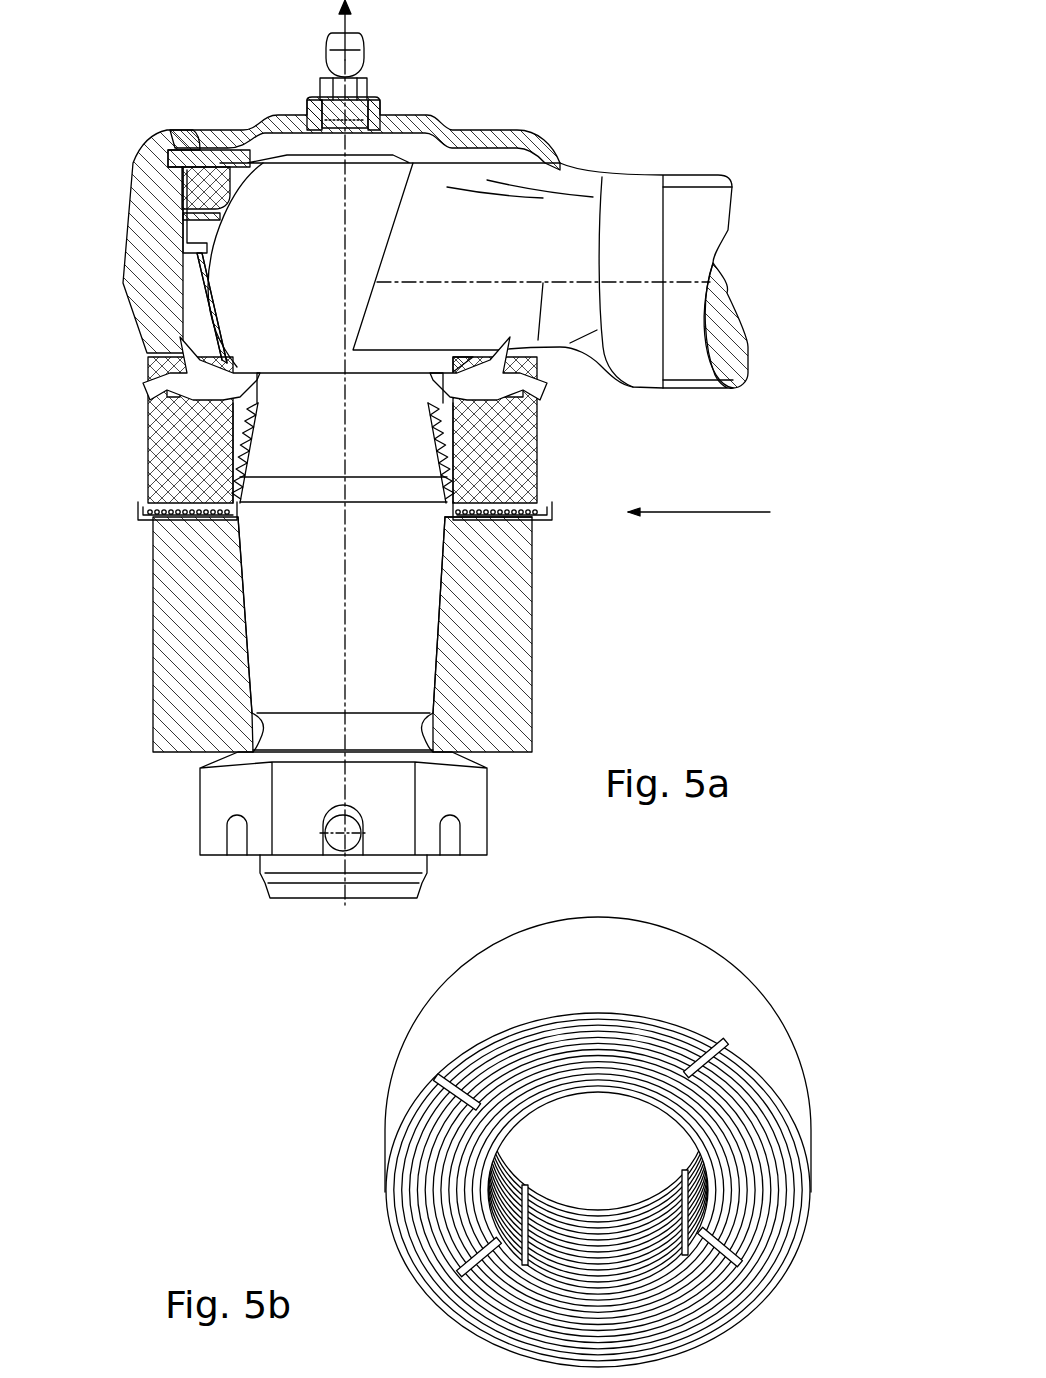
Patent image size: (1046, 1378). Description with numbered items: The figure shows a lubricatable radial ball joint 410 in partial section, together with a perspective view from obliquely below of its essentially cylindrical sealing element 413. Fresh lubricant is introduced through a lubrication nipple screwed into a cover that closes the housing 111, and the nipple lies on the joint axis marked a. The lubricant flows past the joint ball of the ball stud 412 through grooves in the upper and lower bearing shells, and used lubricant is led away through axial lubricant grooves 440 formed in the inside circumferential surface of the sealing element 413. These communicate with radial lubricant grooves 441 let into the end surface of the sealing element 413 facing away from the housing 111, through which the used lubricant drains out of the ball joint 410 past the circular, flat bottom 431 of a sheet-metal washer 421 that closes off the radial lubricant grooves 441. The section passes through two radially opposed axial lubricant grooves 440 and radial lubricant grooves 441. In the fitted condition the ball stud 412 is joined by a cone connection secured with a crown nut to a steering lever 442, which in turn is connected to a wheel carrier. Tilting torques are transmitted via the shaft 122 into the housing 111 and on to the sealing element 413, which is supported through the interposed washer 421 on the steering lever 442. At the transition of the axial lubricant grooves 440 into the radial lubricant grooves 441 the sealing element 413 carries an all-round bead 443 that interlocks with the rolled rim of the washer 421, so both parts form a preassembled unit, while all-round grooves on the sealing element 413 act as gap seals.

In FIG. 5A, the axis direction a is at (344, 17).
In FIG. 5A, the radial ball joint 410 is at (576, 146).
In FIG. 5A, the housing 111 is at (148, 220).
In FIG. 5A, the shaft 122 is at (712, 200).
In FIG. 5A, the ball stud 412 is at (420, 632).
In FIG. 5A, the sealing element 413 is at (148, 450).
In FIG. 5B, the sealing element 413 is at (757, 944).
In FIG. 5A, the sheet-metal washer 421 is at (488, 517).
In FIG. 5A, the bottom 431 is at (692, 512).
In FIG. 5A, the axial lubricant grooves 440 is at (215, 418).
In FIG. 5B, the axial lubricant grooves 440 is at (545, 1198).
In FIG. 5A, the radial lubricant grooves 441 is at (170, 490).
In FIG. 5B, the radial lubricant grooves 441 is at (450, 1085).
In FIG. 5A, the steering lever 442 is at (175, 633).
In FIG. 5B, the bead 443 is at (733, 1283).